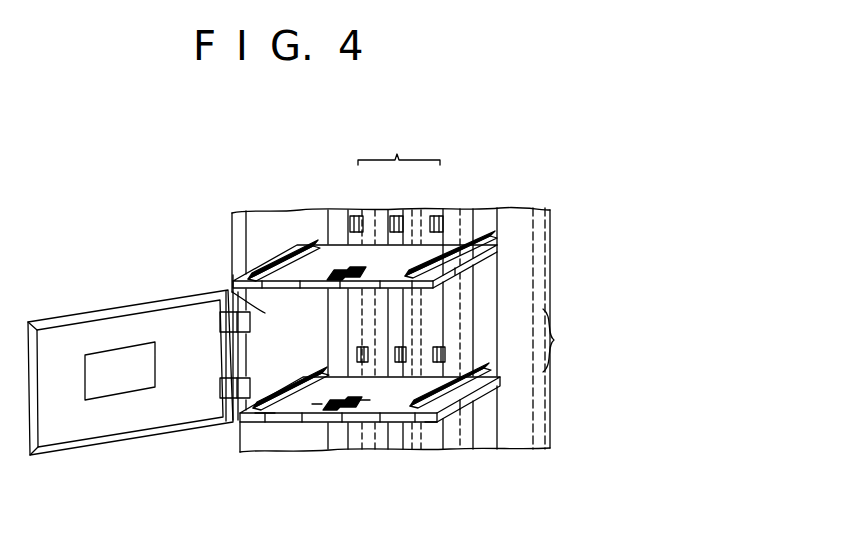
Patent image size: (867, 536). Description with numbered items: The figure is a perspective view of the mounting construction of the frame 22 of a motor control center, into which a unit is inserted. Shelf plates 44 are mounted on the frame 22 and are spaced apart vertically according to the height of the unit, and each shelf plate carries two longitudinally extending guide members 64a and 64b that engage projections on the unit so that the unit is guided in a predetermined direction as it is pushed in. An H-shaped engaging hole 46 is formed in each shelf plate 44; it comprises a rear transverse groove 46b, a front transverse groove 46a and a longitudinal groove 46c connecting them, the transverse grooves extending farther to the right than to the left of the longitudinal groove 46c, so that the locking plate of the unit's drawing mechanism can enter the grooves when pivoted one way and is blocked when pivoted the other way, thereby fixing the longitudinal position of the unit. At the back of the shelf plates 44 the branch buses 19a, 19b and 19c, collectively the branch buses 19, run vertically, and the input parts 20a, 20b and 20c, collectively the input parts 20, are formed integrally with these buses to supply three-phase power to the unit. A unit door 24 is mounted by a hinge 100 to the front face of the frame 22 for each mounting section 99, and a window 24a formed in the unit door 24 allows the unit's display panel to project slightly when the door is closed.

The branch buses 19 is at (399, 143).
The branch bus 19a is at (356, 238).
The branch bus 19b is at (398, 238).
The branch bus 19c is at (441, 238).
The input parts 20 is at (561, 340).
The input part 20a is at (367, 351).
The input part 20b is at (405, 353).
The input part 20c is at (446, 355).
The frame 22 is at (547, 210).
The unit door 24 is at (124, 328).
The window 24a is at (120, 371).
The shelf plates 44 is at (298, 414).
The engaging hole 46 is at (308, 266).
The front transverse groove 46a is at (366, 403).
The rear transverse groove 46b is at (364, 400).
The longitudinal groove 46c is at (318, 404).
The guide member 64a is at (266, 417).
The guide member 64b is at (437, 425).
The mounting section 99 is at (250, 287).
The hinge 100 is at (229, 318).